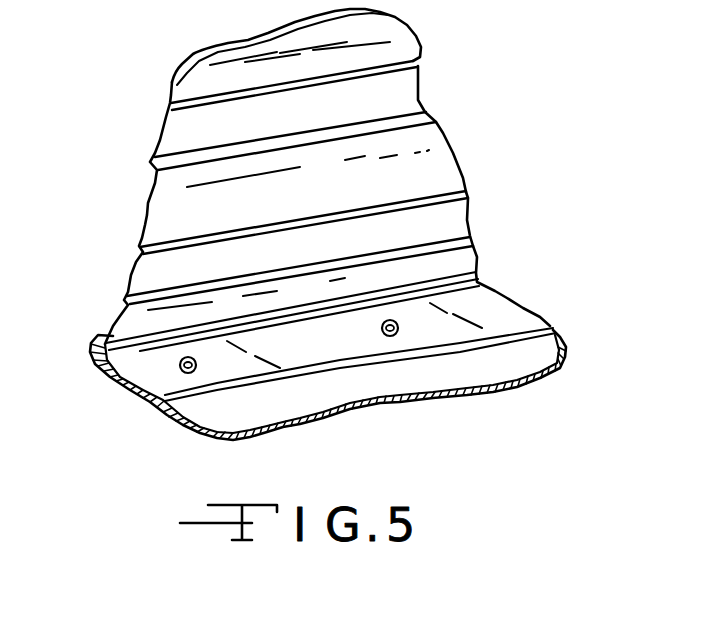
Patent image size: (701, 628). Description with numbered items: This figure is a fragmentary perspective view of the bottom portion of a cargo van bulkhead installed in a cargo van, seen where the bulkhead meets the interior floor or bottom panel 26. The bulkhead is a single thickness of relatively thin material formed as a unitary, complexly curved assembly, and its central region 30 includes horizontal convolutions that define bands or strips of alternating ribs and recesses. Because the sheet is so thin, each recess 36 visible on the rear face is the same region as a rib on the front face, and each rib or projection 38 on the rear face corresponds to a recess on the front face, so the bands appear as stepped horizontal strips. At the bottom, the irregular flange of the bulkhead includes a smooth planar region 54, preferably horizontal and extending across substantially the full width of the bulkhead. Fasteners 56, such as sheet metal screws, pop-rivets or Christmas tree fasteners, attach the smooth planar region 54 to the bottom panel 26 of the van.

The bottom panel 26 is at (308, 407).
The central region 30 is at (170, 105).
The recesses 36 is at (433, 140).
The ribs or projections 38 is at (447, 215).
The smooth planar region 54 is at (503, 310).
The fasteners 56 is at (180, 369).